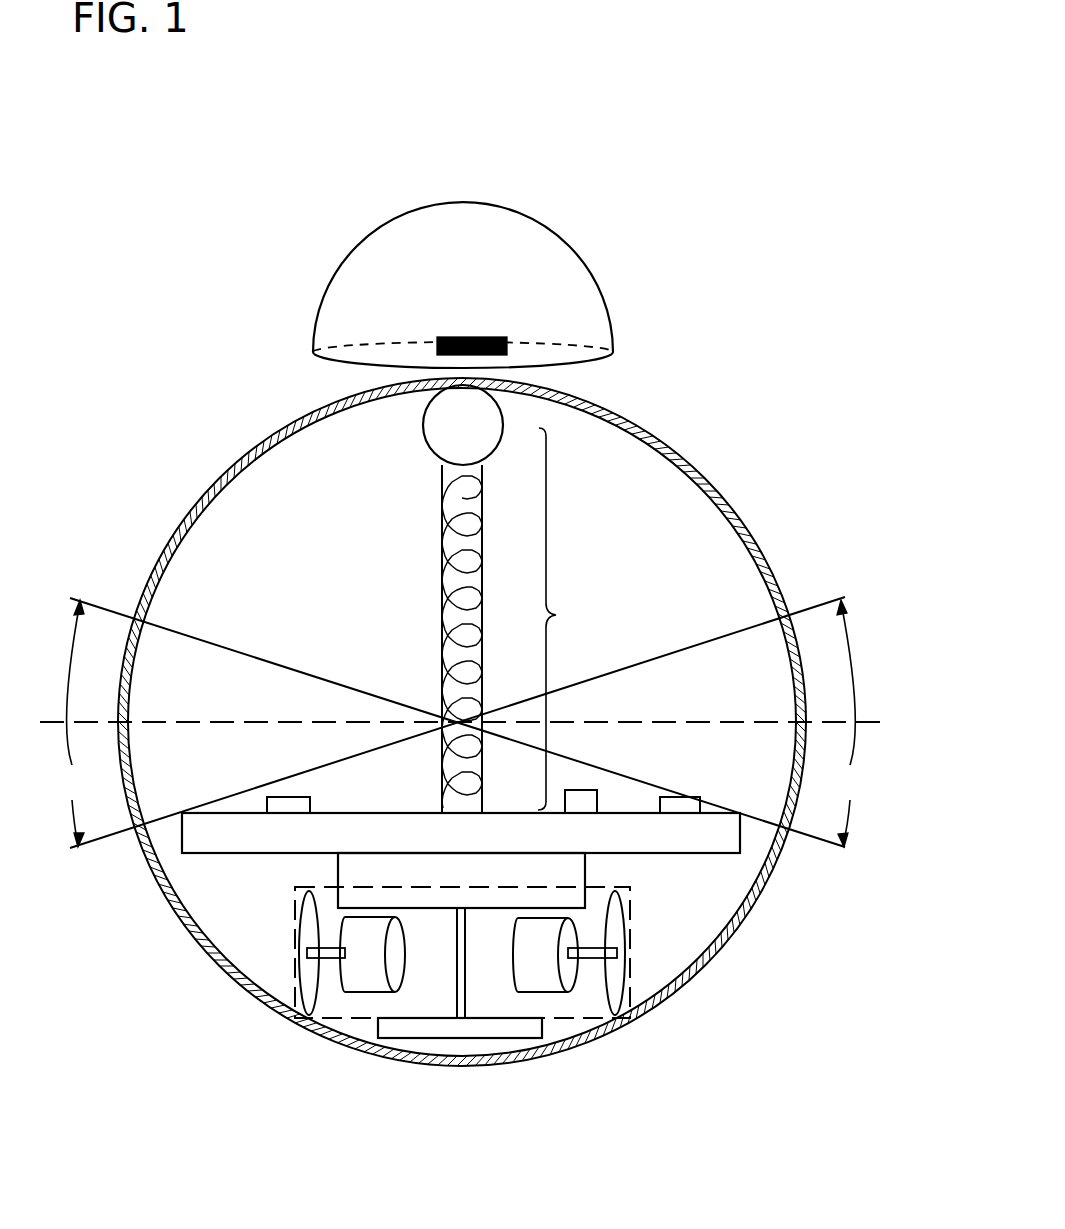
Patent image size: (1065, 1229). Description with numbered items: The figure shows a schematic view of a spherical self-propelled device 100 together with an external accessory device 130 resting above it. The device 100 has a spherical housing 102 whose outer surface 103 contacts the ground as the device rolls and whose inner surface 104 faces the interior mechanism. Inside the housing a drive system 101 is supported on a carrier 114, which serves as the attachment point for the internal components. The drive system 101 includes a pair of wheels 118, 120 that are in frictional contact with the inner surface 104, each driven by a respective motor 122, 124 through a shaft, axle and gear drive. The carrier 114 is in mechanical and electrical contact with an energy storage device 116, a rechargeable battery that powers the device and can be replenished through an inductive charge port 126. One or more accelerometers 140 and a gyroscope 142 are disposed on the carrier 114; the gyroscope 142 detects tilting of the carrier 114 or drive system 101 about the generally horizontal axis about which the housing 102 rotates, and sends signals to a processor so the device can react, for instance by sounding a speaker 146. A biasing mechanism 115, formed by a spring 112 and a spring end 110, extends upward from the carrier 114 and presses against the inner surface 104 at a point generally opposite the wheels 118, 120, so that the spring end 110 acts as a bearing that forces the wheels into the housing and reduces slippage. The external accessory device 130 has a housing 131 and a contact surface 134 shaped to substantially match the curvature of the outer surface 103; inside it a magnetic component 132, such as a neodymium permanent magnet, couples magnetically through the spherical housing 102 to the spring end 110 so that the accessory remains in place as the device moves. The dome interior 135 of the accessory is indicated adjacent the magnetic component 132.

The self-propelled device 100 is at (160, 362).
The drive system 101 is at (292, 936).
The spherical housing 102 is at (740, 450).
The outer surface 103 is at (783, 598).
The inner surface 104 is at (715, 505).
The spring end 110 is at (483, 418).
The spring 112 is at (441, 525).
The carrier 114 is at (536, 847).
The biasing mechanism 115 is at (576, 619).
The energy storage device 116 is at (565, 884).
The wheel 118 is at (300, 918).
The wheel 120 is at (628, 930).
The motor 122 is at (387, 956).
The motor 124 is at (562, 956).
The inductive charge port 126 is at (485, 1040).
The external accessory device 130 is at (393, 247).
The housing 131 is at (545, 224).
The magnetic component 132 is at (482, 336).
The contact surface 134 is at (578, 352).
The interior of dome 135 is at (556, 272).
The accelerometer 140 is at (285, 797).
The gyroscope 142 is at (590, 790).
The speaker 146 is at (775, 692).